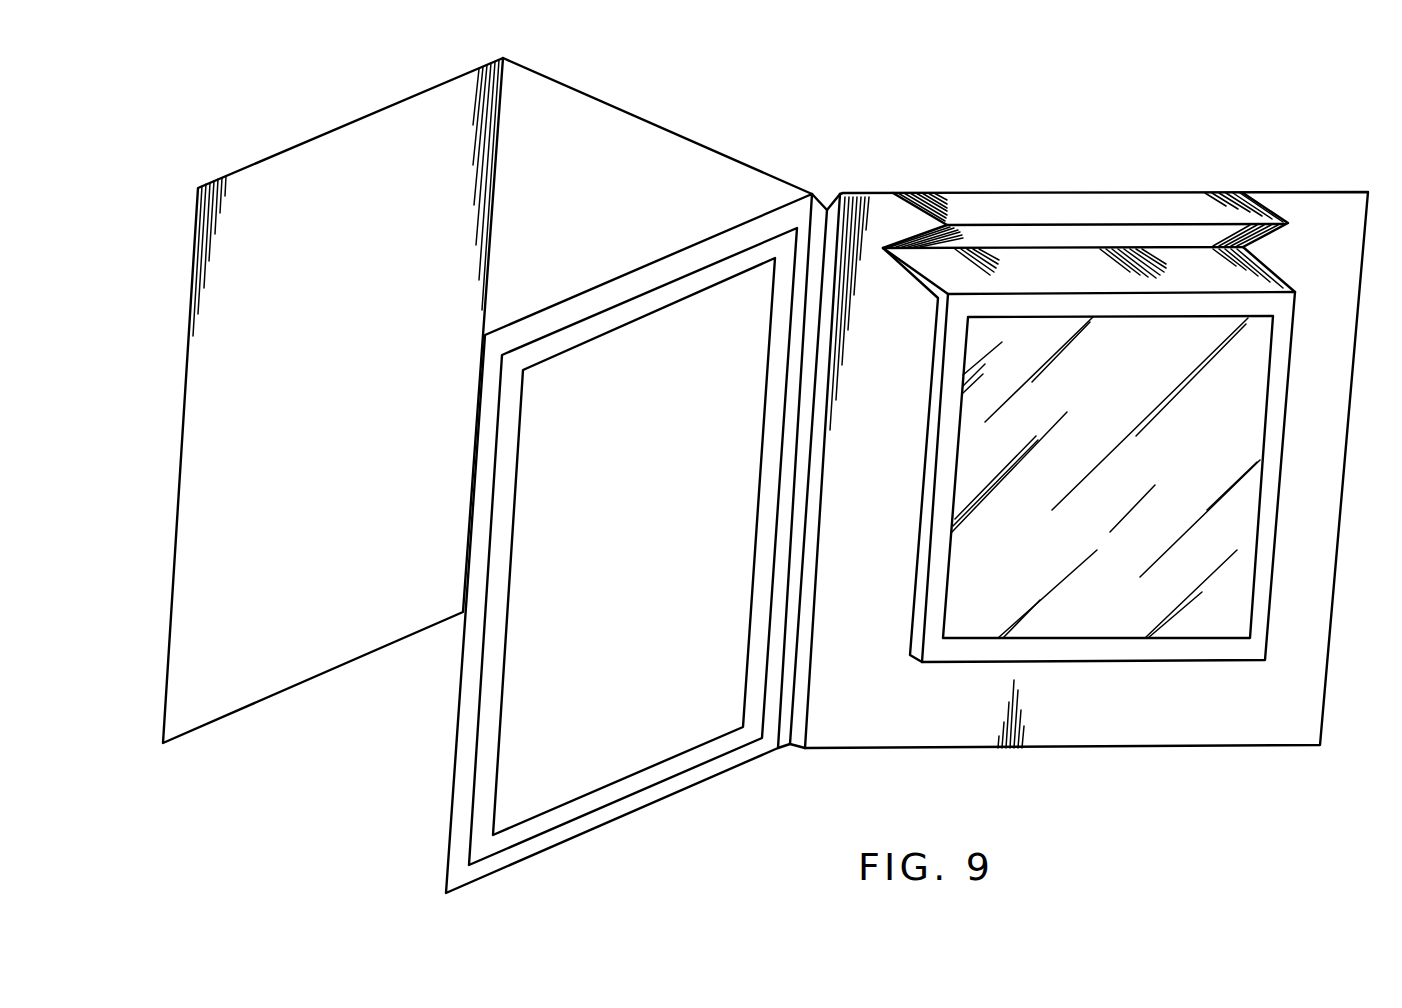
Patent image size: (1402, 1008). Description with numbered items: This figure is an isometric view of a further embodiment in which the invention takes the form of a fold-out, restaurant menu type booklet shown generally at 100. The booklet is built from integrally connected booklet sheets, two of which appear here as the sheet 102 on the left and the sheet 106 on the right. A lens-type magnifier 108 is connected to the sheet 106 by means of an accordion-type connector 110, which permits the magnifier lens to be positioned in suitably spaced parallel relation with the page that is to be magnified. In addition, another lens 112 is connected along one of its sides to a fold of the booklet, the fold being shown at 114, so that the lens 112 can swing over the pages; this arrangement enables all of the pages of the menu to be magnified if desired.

The booklet 100 is at (786, 130).
The booklet sheet 102 is at (275, 176).
The booklet sheet 106 is at (1086, 496).
The lens-type magnifier 108 is at (1266, 546).
The accordion-type connector 110 is at (1107, 205).
The lens 112 is at (463, 668).
The fold of the booklet 114 is at (798, 642).